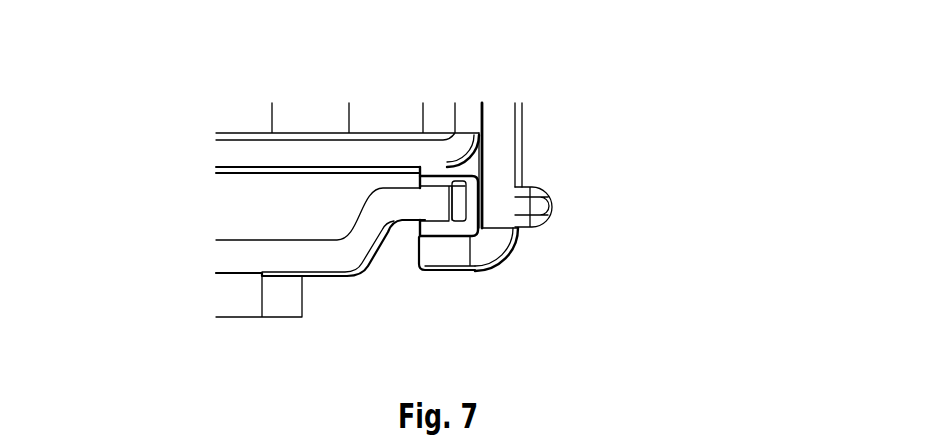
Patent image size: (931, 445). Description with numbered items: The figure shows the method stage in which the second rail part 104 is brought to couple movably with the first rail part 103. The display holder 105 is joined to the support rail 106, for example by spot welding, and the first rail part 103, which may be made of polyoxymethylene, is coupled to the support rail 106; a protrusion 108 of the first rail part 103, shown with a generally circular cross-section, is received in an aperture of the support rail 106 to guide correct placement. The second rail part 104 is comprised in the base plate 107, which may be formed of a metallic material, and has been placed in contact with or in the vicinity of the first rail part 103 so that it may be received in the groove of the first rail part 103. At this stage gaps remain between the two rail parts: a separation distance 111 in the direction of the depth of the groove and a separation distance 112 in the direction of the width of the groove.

The first rail part 103 is at (468, 183).
The second rail part 104 is at (422, 203).
The display holder 105 is at (287, 122).
The support rail 106 is at (505, 138).
The base plate 107 is at (287, 247).
The protrusion 108 is at (552, 210).
The separation distance 111 is at (450, 212).
The separation distance 112 is at (432, 221).